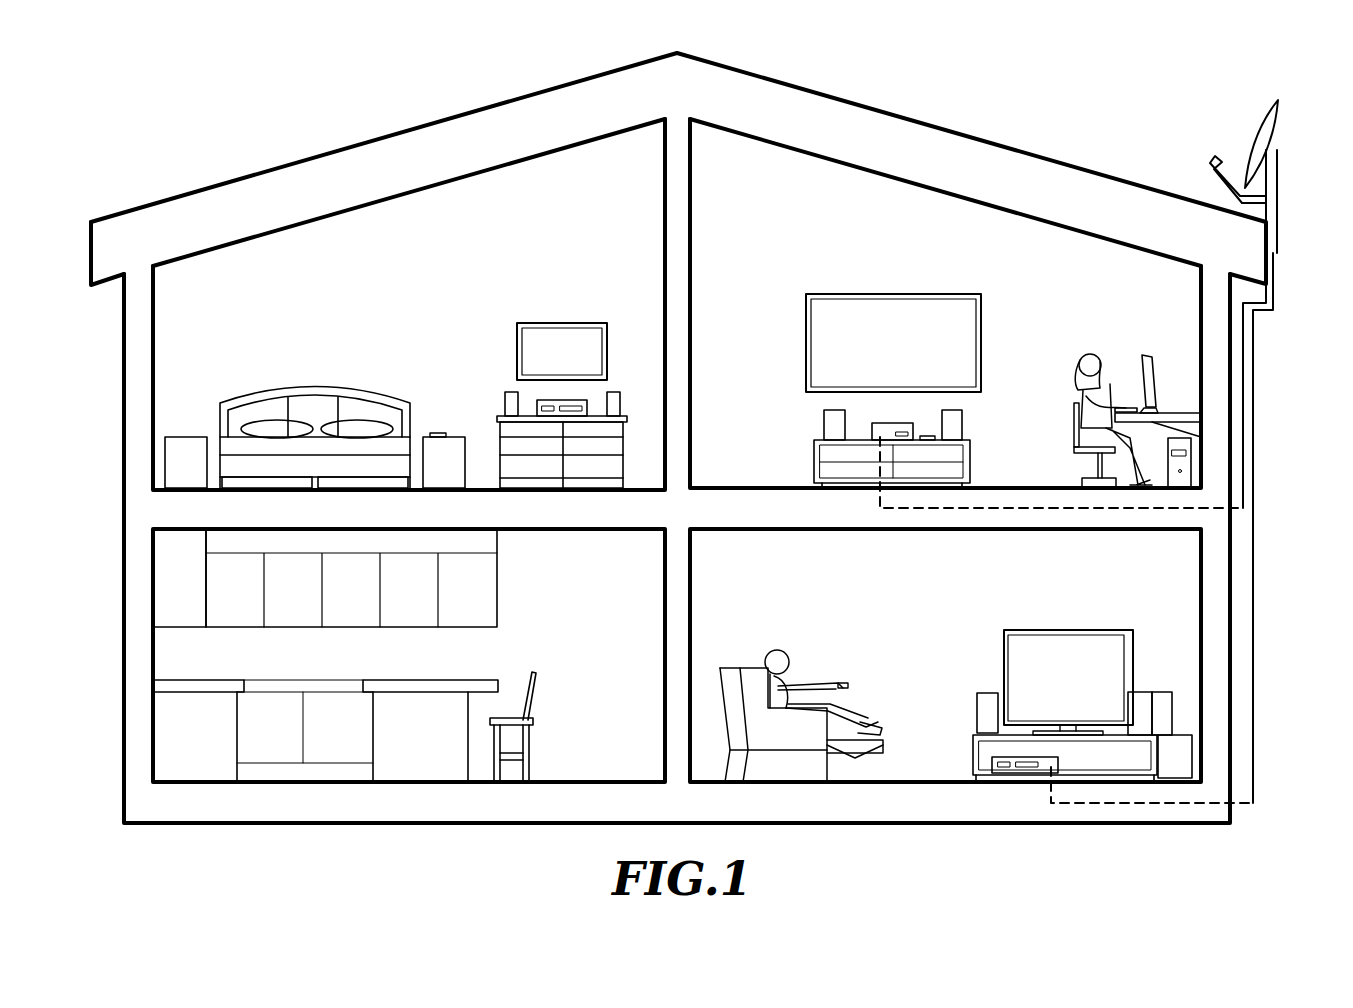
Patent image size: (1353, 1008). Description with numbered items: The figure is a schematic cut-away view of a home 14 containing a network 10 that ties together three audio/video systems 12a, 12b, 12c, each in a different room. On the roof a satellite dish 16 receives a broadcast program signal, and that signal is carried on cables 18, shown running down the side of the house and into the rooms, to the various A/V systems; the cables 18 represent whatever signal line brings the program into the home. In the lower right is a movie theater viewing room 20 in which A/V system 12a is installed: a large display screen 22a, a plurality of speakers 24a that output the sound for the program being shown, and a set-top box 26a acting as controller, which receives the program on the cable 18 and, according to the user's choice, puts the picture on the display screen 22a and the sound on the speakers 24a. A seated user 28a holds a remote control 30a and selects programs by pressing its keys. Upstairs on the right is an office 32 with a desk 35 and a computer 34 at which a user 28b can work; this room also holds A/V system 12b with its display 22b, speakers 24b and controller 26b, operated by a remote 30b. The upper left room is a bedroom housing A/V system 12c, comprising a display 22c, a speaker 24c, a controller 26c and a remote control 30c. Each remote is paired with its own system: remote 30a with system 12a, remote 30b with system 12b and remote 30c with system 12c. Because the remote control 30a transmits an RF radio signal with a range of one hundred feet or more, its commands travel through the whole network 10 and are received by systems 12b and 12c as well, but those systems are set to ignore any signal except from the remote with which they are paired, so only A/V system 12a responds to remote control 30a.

The network 10 is at (1072, 70).
The A/V system 12a is at (1118, 691).
The A/V system 12b is at (880, 352).
The A/V system 12c is at (417, 385).
The home 14 is at (402, 153).
The satellite dish 16 is at (1268, 133).
The cables 18 is at (1254, 372).
The movie theater viewing room 20 is at (730, 572).
The display screen 22a is at (1068, 648).
The display 22b is at (900, 315).
The display 22c is at (567, 345).
The speakers 24a is at (988, 700).
The speakers 24b is at (825, 424).
The speaker 24c is at (613, 392).
The set-top box 26a is at (992, 766).
The controller 26b is at (896, 423).
The controller 26c is at (560, 400).
The user 28a is at (758, 632).
The user 28b is at (1069, 344).
The remote control 30a is at (846, 683).
The remote 30b is at (930, 436).
The remote control 30c is at (440, 433).
The office 32 is at (730, 192).
The computer 34 is at (1180, 462).
The desk 35 is at (1158, 410).